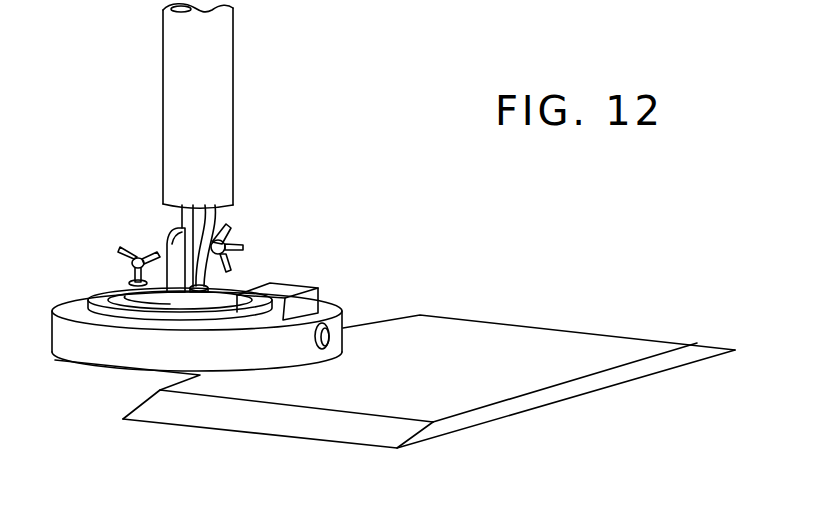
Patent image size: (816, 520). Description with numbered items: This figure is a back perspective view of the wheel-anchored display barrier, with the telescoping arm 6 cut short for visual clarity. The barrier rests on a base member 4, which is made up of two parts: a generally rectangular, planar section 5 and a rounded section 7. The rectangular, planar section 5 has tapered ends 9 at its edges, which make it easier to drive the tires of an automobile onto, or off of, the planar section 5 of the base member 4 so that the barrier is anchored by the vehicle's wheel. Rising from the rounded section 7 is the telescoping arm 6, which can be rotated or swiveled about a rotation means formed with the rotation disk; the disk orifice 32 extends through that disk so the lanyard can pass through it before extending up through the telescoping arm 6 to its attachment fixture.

The base member 4 is at (570, 382).
The rectangular, planar section 5 is at (742, 342).
The telescoping arm 6 is at (233, 103).
The rounded section 7 is at (140, 394).
The tapered ends 9 is at (348, 428).
The disk orifice 32 is at (222, 285).